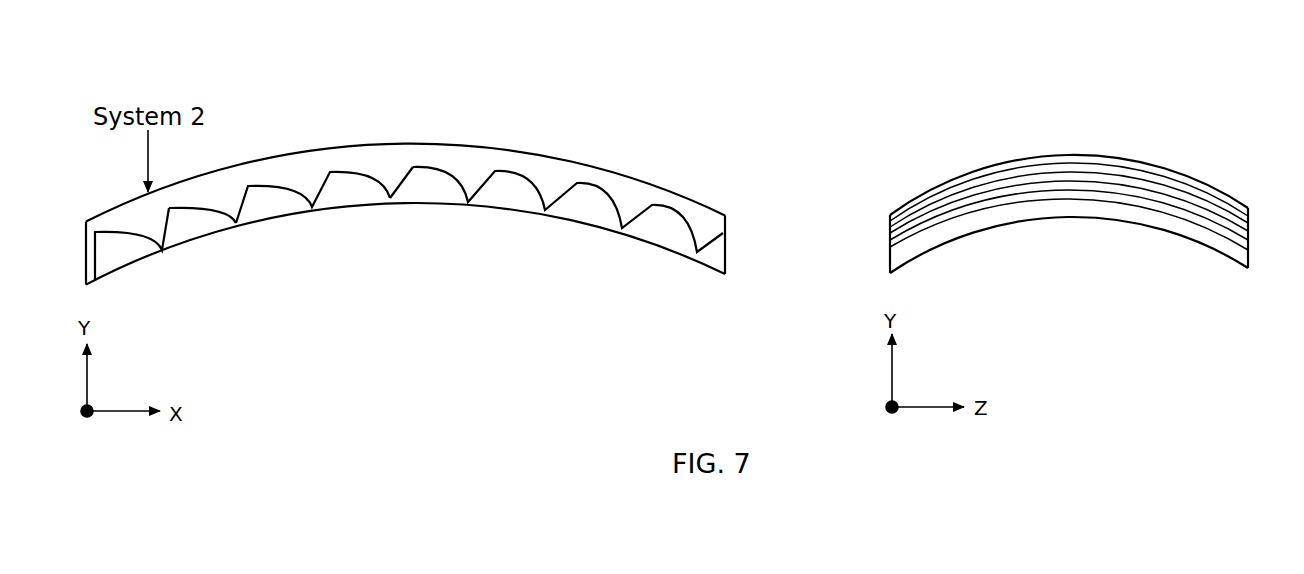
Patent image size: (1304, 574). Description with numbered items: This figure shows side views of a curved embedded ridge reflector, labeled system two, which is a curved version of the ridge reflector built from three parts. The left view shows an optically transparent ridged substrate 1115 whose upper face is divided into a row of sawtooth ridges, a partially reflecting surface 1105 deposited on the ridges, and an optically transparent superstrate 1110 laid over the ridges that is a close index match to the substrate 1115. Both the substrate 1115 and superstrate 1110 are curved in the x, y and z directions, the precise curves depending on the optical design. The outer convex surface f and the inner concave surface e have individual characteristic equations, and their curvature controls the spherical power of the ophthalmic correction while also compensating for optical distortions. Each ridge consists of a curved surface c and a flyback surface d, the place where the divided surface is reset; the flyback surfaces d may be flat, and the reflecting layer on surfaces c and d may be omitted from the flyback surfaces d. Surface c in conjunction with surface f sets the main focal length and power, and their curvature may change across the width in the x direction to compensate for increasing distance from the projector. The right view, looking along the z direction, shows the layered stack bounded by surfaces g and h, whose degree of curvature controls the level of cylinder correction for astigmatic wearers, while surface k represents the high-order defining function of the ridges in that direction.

The partially reflecting surface 1105 is at (409, 191).
The optically transparent superstrate 1110 is at (463, 171).
The optically transparent ridged substrate 1115 is at (463, 257).
The ridge surface c is at (212, 223).
The flyback surface d is at (410, 196).
The inner surface e is at (510, 213).
The outer surface f is at (508, 143).
The surface g is at (1067, 153).
The surface h is at (1067, 220).
The surface k is at (1262, 212).